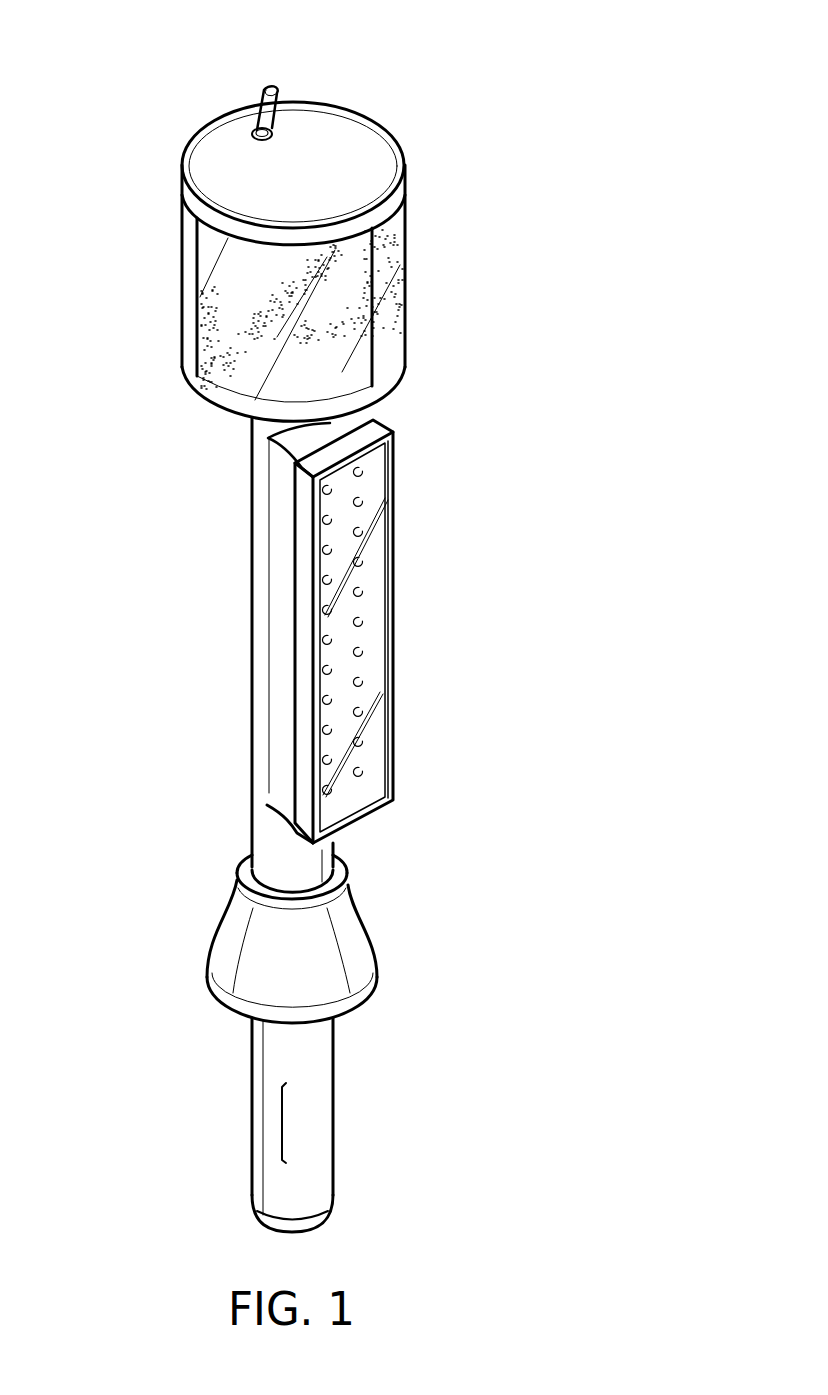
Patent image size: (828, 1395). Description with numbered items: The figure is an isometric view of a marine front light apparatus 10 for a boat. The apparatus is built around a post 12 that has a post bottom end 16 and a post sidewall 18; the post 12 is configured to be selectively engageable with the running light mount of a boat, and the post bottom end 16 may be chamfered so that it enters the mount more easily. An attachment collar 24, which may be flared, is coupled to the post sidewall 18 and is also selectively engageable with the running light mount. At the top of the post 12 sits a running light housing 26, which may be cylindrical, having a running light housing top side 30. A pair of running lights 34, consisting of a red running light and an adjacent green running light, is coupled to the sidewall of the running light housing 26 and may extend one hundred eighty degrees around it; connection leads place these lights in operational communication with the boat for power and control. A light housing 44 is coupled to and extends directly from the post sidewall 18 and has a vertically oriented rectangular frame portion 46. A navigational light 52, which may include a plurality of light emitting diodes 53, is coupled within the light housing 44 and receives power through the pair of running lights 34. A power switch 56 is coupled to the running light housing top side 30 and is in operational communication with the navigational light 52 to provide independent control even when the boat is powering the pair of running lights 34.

The marine front light apparatus 10 is at (606, 424).
The post 12 is at (333, 1108).
The post bottom end 16 is at (302, 1227).
The post sidewall 18 is at (282, 1125).
The attachment collar 24 is at (360, 918).
The running light housing 26 is at (197, 375).
The running light housing top side 30 is at (363, 143).
The pair of running lights 34 is at (327, 315).
The light housing 44 is at (277, 573).
The vertically oriented rectangular frame portion 46 is at (302, 700).
The navigational light 52 is at (380, 682).
The light emitting diodes 53 is at (380, 528).
The power switch 56 is at (256, 134).